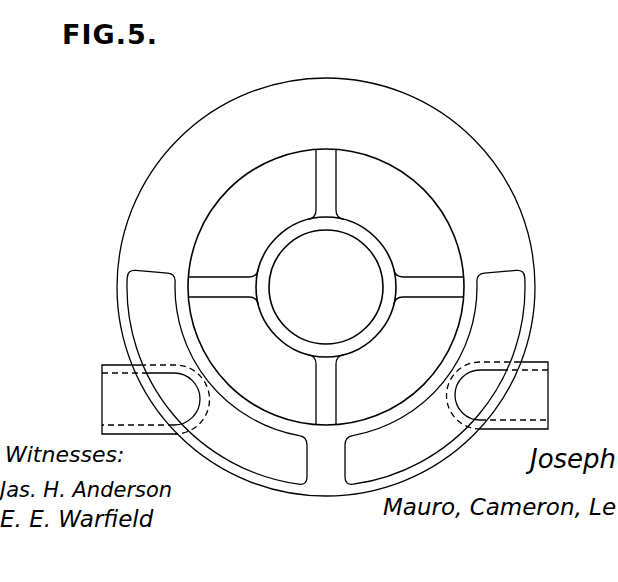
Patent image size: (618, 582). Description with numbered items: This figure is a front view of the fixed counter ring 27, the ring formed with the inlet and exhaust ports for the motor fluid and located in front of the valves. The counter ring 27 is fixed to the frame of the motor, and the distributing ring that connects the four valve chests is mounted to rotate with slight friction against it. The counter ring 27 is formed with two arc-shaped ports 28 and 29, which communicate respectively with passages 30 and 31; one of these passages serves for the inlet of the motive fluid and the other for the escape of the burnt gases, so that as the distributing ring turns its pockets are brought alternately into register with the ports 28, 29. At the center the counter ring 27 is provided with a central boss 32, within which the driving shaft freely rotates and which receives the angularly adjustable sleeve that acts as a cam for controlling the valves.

The counter ring 27 is at (326, 287).
The port 28 is at (187, 412).
The port 29 is at (472, 397).
The passage 30 is at (112, 385).
The passage 31 is at (538, 375).
The central boss 32 is at (293, 343).